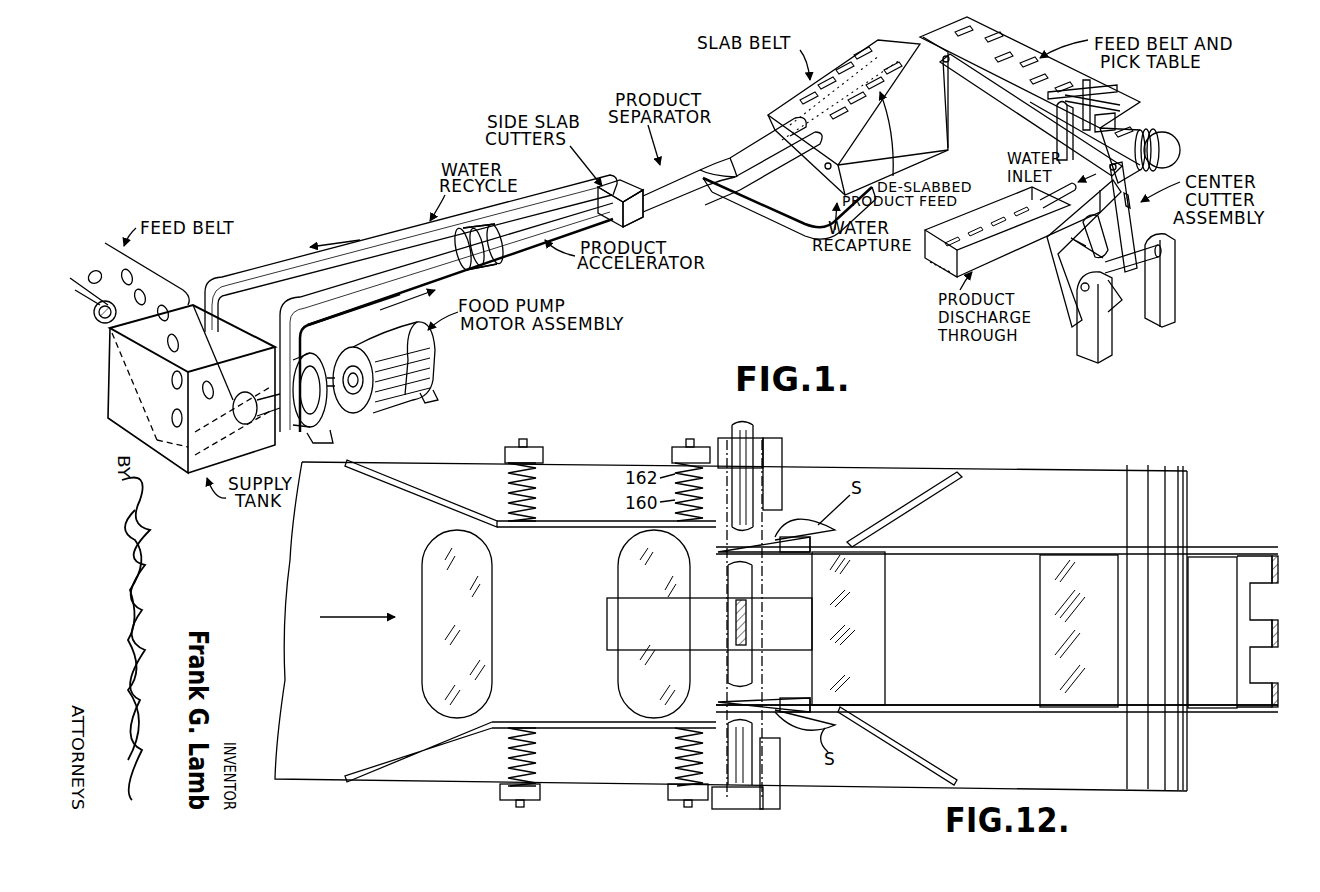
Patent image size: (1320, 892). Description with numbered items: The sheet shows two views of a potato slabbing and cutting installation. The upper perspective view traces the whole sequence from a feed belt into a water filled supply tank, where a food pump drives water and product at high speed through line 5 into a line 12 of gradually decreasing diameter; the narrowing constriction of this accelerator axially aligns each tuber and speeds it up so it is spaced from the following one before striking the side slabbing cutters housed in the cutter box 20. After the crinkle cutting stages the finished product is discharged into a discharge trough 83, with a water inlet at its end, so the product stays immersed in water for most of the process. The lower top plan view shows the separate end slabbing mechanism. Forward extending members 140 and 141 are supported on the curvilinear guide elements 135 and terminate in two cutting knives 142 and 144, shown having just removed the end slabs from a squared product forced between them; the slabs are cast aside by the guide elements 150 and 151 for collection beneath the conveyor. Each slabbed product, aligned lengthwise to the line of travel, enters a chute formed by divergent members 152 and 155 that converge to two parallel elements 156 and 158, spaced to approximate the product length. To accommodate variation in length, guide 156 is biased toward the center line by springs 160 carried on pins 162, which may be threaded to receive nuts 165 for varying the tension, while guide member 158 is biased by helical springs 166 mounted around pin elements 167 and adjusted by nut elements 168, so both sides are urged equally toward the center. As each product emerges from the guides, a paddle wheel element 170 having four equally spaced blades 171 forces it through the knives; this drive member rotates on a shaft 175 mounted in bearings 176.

In FIG. 1, the line 5 is at (433, 278).
In FIG. 1, the line of gradually decreasing diameter 12 is at (523, 250).
In FIG. 1, the cutter box 20 is at (645, 215).
In FIG. 1, the discharge trough 83 is at (925, 250).
In FIG. 12, the curvilinear guide elements 135 is at (1262, 560).
In FIG. 12, the forward extending member 140 is at (995, 547).
In FIG. 12, the forward extending member 141 is at (1027, 710).
In FIG. 12, the cutting knife 142 is at (740, 552).
In FIG. 12, the cutting knife 144 is at (752, 700).
In FIG. 12, the guide element 150 is at (915, 505).
In FIG. 12, the guide element 151 is at (905, 742).
In FIG. 12, the divergent member 152 is at (393, 480).
In FIG. 12, the divergent member 155 is at (397, 760).
In FIG. 12, the parallel element 156 is at (572, 521).
In FIG. 12, the parallel element 158 is at (548, 722).
In FIG. 12, the springs 160 is at (537, 483).
In FIG. 12, the pins 162 is at (508, 470).
In FIG. 12, the nuts 165 is at (535, 450).
In FIG. 12, the helical springs 166 is at (536, 749).
In FIG. 12, the pin elements 167 is at (508, 762).
In FIG. 12, the nut elements 168 is at (540, 794).
In FIG. 12, the paddle wheel element 170 is at (603, 618).
In FIG. 12, the blades 171 is at (754, 618).
In FIG. 12, the shaft 175 is at (760, 428).
In FIG. 12, the bearings 176 is at (745, 805).